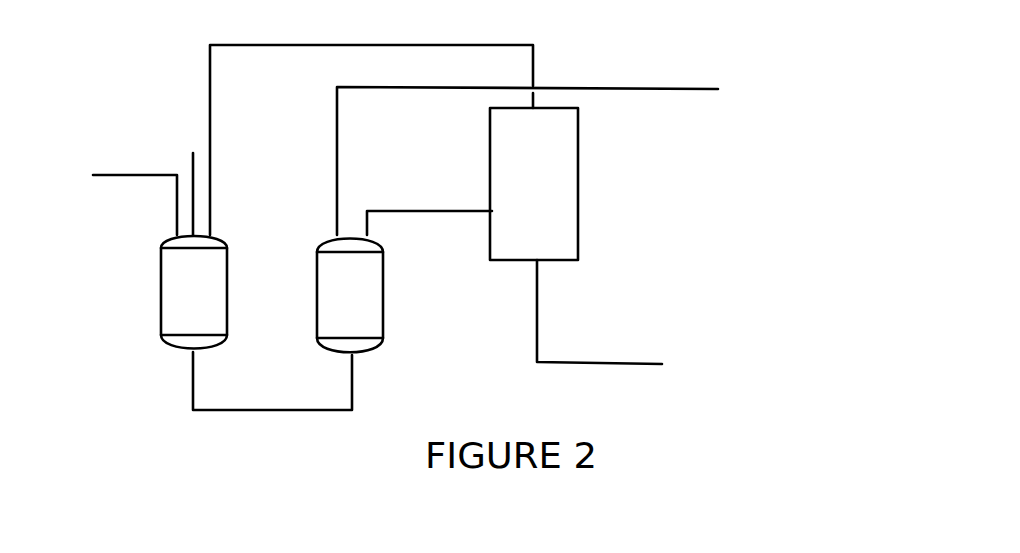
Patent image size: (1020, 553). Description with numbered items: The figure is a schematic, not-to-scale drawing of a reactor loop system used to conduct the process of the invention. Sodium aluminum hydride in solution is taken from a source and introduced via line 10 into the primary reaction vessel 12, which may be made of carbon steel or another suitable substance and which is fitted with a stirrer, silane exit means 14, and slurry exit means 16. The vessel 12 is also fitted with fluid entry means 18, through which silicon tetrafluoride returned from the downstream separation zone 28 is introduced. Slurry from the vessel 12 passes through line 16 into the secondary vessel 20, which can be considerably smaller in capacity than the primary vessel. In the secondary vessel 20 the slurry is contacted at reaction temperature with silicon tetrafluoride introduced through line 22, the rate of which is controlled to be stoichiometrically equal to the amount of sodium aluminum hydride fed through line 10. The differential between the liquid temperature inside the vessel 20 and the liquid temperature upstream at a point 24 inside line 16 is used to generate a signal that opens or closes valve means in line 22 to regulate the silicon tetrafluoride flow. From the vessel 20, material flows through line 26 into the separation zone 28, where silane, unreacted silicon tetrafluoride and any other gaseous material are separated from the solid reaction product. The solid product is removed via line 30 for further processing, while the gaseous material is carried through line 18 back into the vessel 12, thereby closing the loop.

The line 10 is at (141, 177).
The reaction vessel 12 is at (208, 306).
The silane exit means 14 is at (193, 153).
The slurry exit means 16 is at (291, 410).
The fluid entry means 18 is at (210, 117).
The secondary vessel 20 is at (367, 309).
The line 22 is at (337, 126).
The point 24 is at (353, 376).
The line 26 is at (440, 211).
The separation zone 28 is at (542, 194).
The line 30 is at (639, 362).